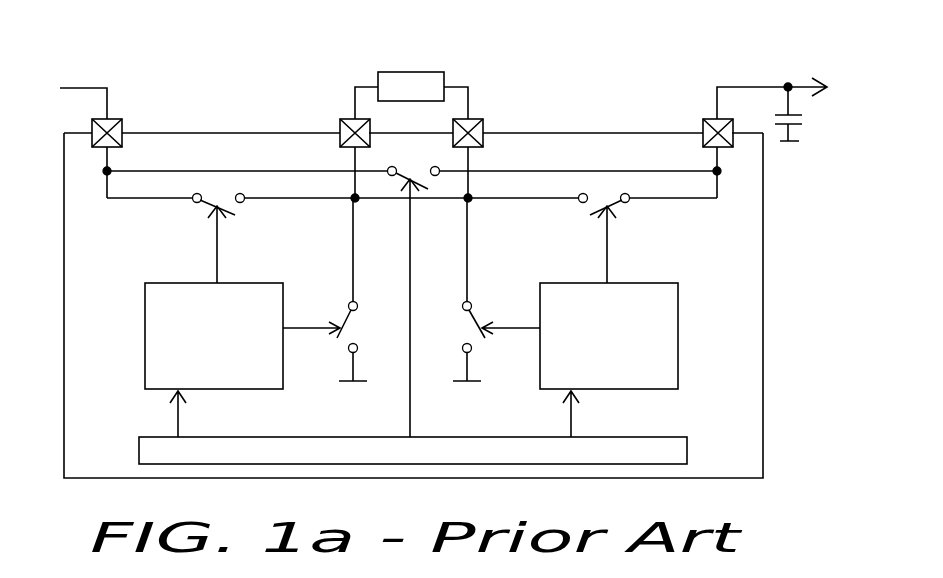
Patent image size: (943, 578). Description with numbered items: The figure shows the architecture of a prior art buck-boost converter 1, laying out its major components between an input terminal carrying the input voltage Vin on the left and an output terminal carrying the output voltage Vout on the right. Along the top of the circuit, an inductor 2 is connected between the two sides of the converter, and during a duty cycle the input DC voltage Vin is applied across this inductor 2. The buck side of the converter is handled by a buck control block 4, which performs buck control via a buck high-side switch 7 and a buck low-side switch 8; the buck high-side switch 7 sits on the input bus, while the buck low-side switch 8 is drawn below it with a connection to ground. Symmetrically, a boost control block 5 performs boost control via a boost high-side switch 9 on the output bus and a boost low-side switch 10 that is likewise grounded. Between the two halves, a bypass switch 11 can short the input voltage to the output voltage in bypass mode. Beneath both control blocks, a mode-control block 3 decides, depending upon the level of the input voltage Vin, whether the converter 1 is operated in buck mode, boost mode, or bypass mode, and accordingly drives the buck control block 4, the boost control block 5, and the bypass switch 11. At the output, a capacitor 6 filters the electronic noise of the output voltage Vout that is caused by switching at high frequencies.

The buck-boost converter 1 is at (487, 21).
The inductor 2 is at (392, 72).
The mode-control block 3 is at (687, 450).
The buck control block 4 is at (145, 370).
The boost control block 5 is at (678, 370).
The capacitor 6 is at (807, 118).
The buck high-side switch 7 is at (202, 212).
The buck low-side switch 8 is at (343, 310).
The boost high-side switch 9 is at (580, 209).
The boost low-side switch 10 is at (475, 349).
The bypass switch 11 is at (400, 176).